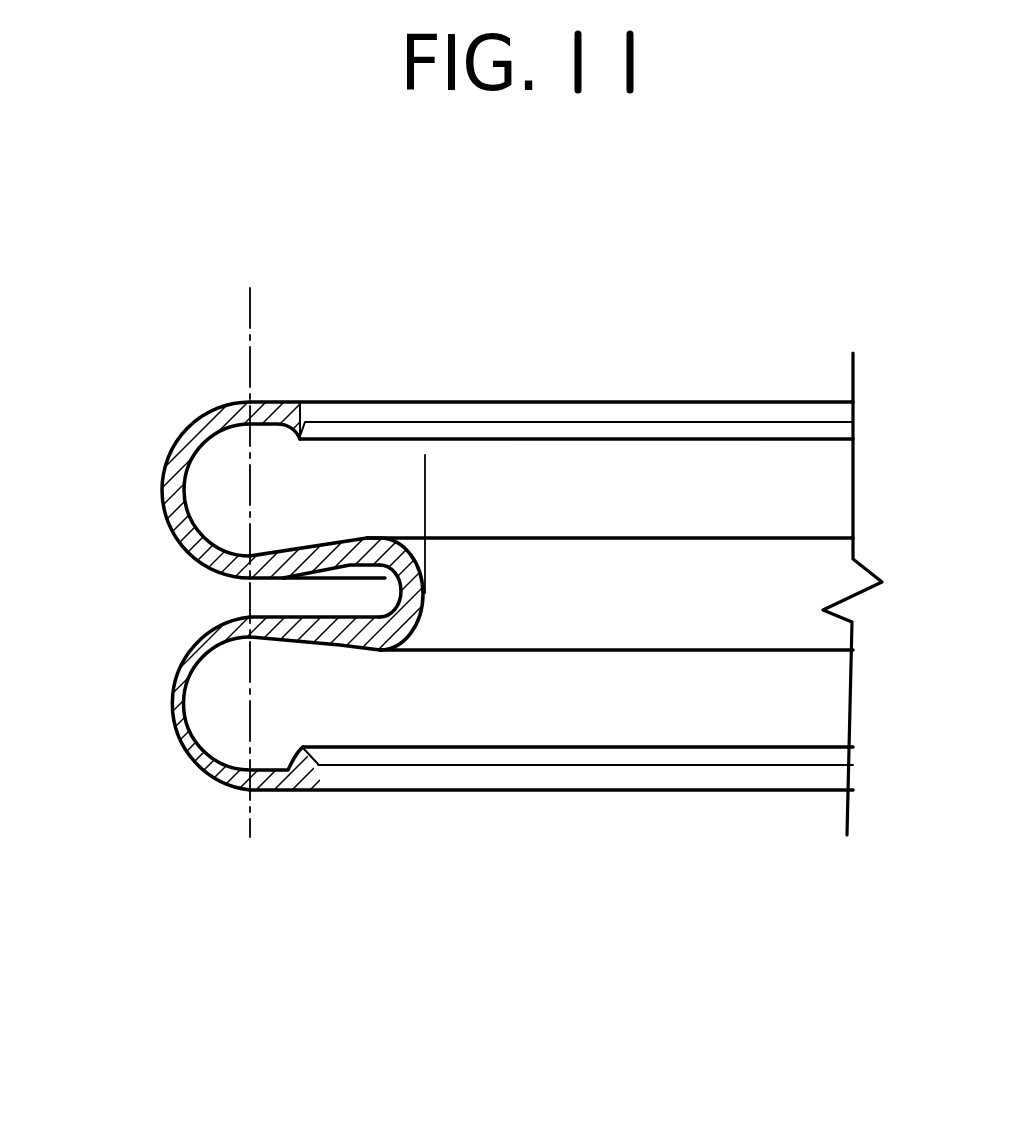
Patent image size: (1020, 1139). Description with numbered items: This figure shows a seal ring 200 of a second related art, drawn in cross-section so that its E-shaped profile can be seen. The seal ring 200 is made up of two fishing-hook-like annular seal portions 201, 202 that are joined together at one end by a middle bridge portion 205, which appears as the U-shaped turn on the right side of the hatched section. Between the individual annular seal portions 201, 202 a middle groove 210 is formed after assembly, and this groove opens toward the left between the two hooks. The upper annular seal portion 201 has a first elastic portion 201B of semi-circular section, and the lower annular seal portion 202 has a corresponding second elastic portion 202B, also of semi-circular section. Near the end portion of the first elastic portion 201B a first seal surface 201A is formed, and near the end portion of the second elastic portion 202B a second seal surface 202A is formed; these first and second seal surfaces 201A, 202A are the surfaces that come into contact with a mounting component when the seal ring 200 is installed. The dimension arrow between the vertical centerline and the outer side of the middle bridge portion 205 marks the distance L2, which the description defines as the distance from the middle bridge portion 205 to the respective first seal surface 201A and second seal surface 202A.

The seal ring 200 is at (687, 363).
The annular seal portion 201 is at (583, 490).
The first seal surface 201A is at (243, 400).
The first elastic portion 201B is at (172, 450).
The annular seal portion 202 is at (580, 697).
The second seal surface 202A is at (242, 793).
The second elastic portion 202B is at (163, 706).
The middle bridge portion 205 is at (410, 593).
The middle groove 210 is at (275, 600).
The distance from middle bridge portion to seal surfaces L2 is at (424, 480).
The centerline axis Y is at (256, 336).